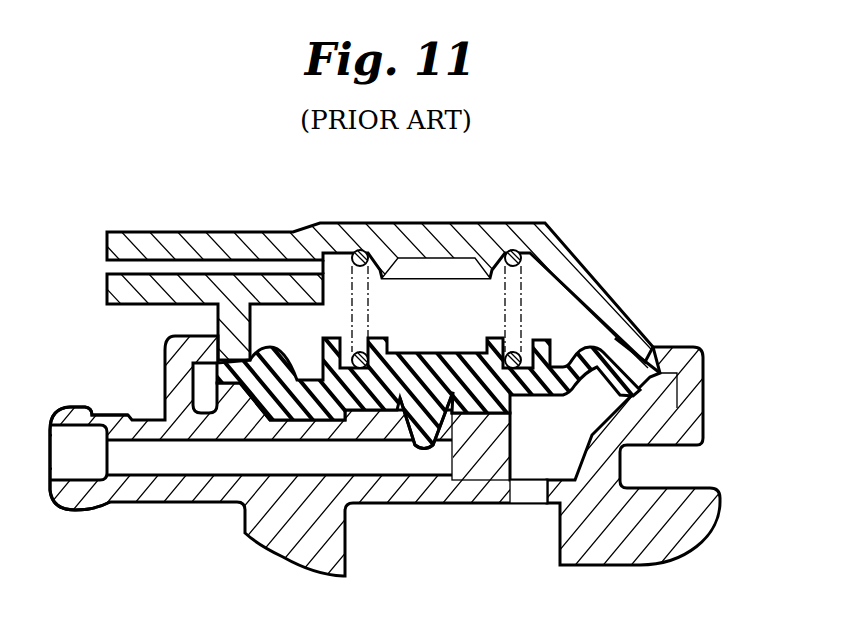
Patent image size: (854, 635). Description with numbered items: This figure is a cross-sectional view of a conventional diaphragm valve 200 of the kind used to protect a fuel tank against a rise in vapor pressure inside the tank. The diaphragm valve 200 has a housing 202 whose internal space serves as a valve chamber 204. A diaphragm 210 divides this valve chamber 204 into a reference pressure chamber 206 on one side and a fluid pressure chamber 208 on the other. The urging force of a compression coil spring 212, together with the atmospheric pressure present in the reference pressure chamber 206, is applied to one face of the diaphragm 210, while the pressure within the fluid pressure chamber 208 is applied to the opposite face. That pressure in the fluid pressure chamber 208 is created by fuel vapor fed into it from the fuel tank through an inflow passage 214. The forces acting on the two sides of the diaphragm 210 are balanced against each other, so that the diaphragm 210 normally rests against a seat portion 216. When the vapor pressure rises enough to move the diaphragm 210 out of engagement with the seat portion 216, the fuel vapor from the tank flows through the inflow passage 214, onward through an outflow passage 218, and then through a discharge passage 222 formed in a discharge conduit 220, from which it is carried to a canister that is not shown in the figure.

The diaphragm valve 200 is at (543, 207).
The housing 202 is at (622, 553).
The valve chamber 204 is at (427, 317).
The reference pressure chamber 206 is at (583, 290).
The fluid pressure chamber 208 is at (612, 367).
The diaphragm 210 is at (473, 352).
The compression coil spring 212 is at (370, 298).
The inflow passage 214 is at (523, 495).
The seat portion 216 is at (480, 409).
The outflow passage 218 is at (440, 453).
The discharge conduit 220 is at (150, 487).
The discharge passage 222 is at (213, 460).